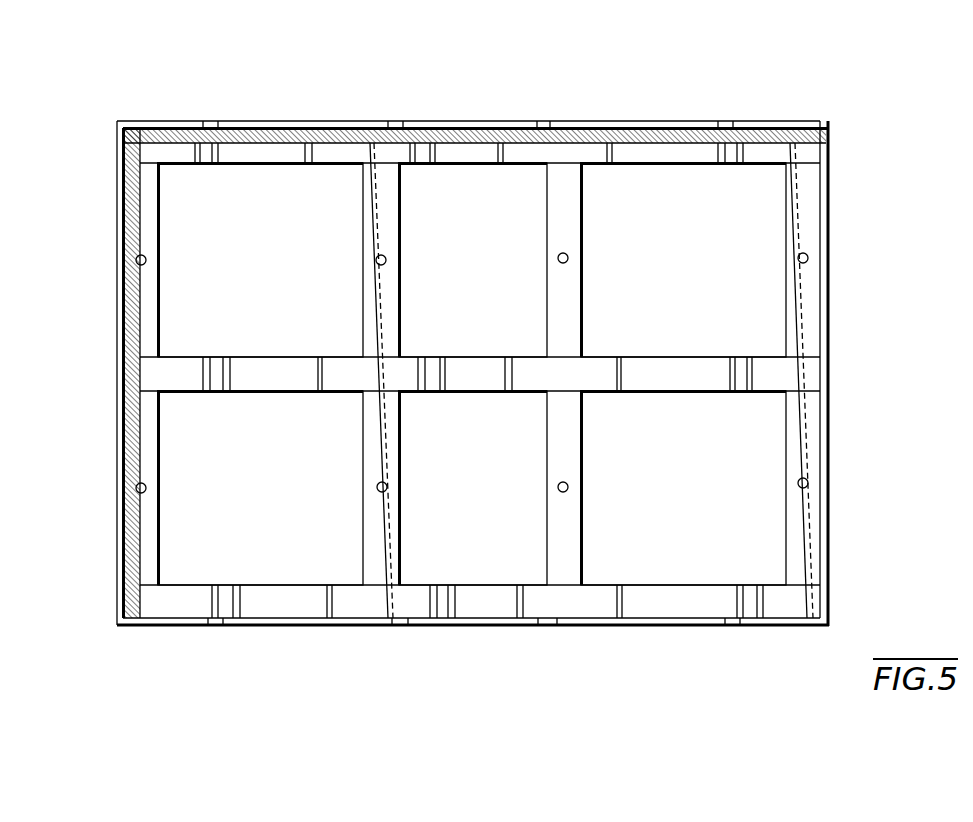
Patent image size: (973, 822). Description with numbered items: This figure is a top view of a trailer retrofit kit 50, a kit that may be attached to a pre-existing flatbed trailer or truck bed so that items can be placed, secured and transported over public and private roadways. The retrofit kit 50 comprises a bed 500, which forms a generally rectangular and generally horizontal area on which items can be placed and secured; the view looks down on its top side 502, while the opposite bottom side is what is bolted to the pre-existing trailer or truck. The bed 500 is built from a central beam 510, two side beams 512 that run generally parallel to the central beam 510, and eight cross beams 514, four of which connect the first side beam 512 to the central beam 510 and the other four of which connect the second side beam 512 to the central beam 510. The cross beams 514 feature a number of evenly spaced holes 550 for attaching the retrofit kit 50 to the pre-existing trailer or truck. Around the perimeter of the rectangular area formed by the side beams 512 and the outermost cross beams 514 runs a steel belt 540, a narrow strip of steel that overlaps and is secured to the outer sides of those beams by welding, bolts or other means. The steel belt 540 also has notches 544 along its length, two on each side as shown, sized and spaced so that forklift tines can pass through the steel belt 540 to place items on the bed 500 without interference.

The retrofit kit 50 is at (216, 88).
The bed 500 is at (177, 113).
The top side 502 is at (655, 147).
The central beam 510 is at (708, 368).
The side beams 512 is at (733, 153).
The cross beams 514 is at (377, 226).
The steel belt 540 is at (147, 125).
The notches 544 is at (588, 121).
The holes 550 is at (147, 258).